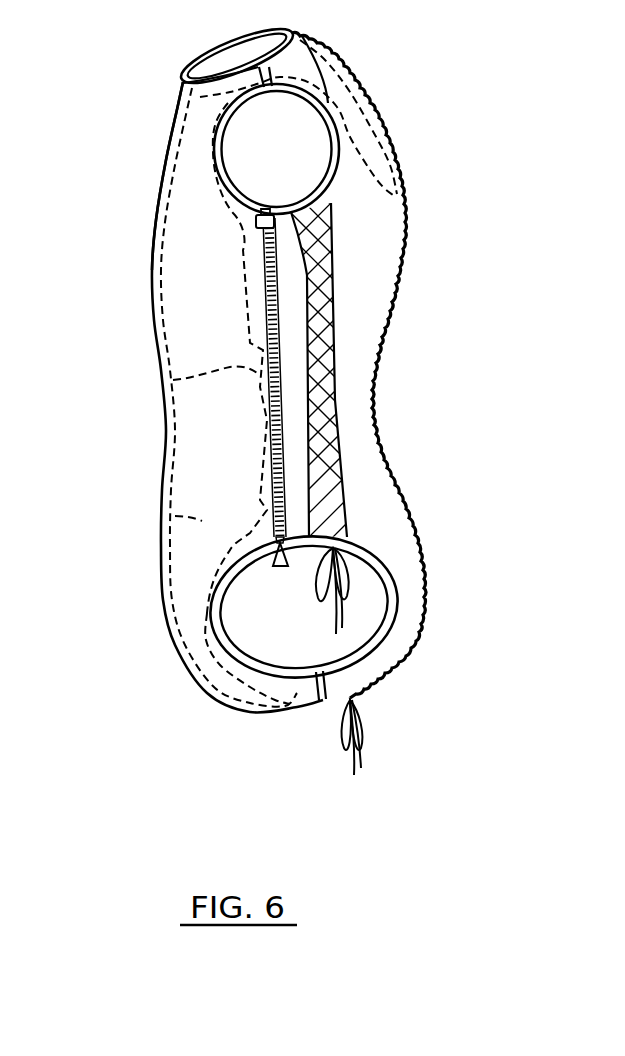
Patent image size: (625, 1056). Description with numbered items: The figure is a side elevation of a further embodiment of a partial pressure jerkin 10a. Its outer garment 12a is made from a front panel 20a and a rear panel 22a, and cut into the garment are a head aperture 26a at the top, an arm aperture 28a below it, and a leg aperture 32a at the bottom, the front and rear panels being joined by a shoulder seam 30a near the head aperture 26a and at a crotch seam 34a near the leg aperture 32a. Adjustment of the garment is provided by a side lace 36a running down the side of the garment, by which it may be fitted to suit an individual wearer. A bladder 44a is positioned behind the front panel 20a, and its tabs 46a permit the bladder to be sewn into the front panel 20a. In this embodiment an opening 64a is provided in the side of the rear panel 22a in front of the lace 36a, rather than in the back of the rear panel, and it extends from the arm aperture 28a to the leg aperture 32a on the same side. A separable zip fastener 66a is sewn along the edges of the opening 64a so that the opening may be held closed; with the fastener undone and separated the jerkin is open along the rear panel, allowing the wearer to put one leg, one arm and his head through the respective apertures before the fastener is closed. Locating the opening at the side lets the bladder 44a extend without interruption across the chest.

The partial pressure jerkin 10a is at (383, 393).
The outer garment 12a is at (176, 120).
The front panel 20a is at (178, 252).
The rear panel 22a is at (383, 252).
The head aperture 26a is at (212, 68).
The arm aperture 28a is at (315, 128).
The shoulder seam 30a is at (260, 66).
The leg aperture 32a is at (366, 630).
The crotch seam 34a is at (313, 697).
The side lace 36a is at (330, 328).
The bladder 44a is at (175, 517).
The tabs 46a is at (173, 380).
The opening 64a is at (263, 210).
The separable zip fastener 66a is at (282, 563).